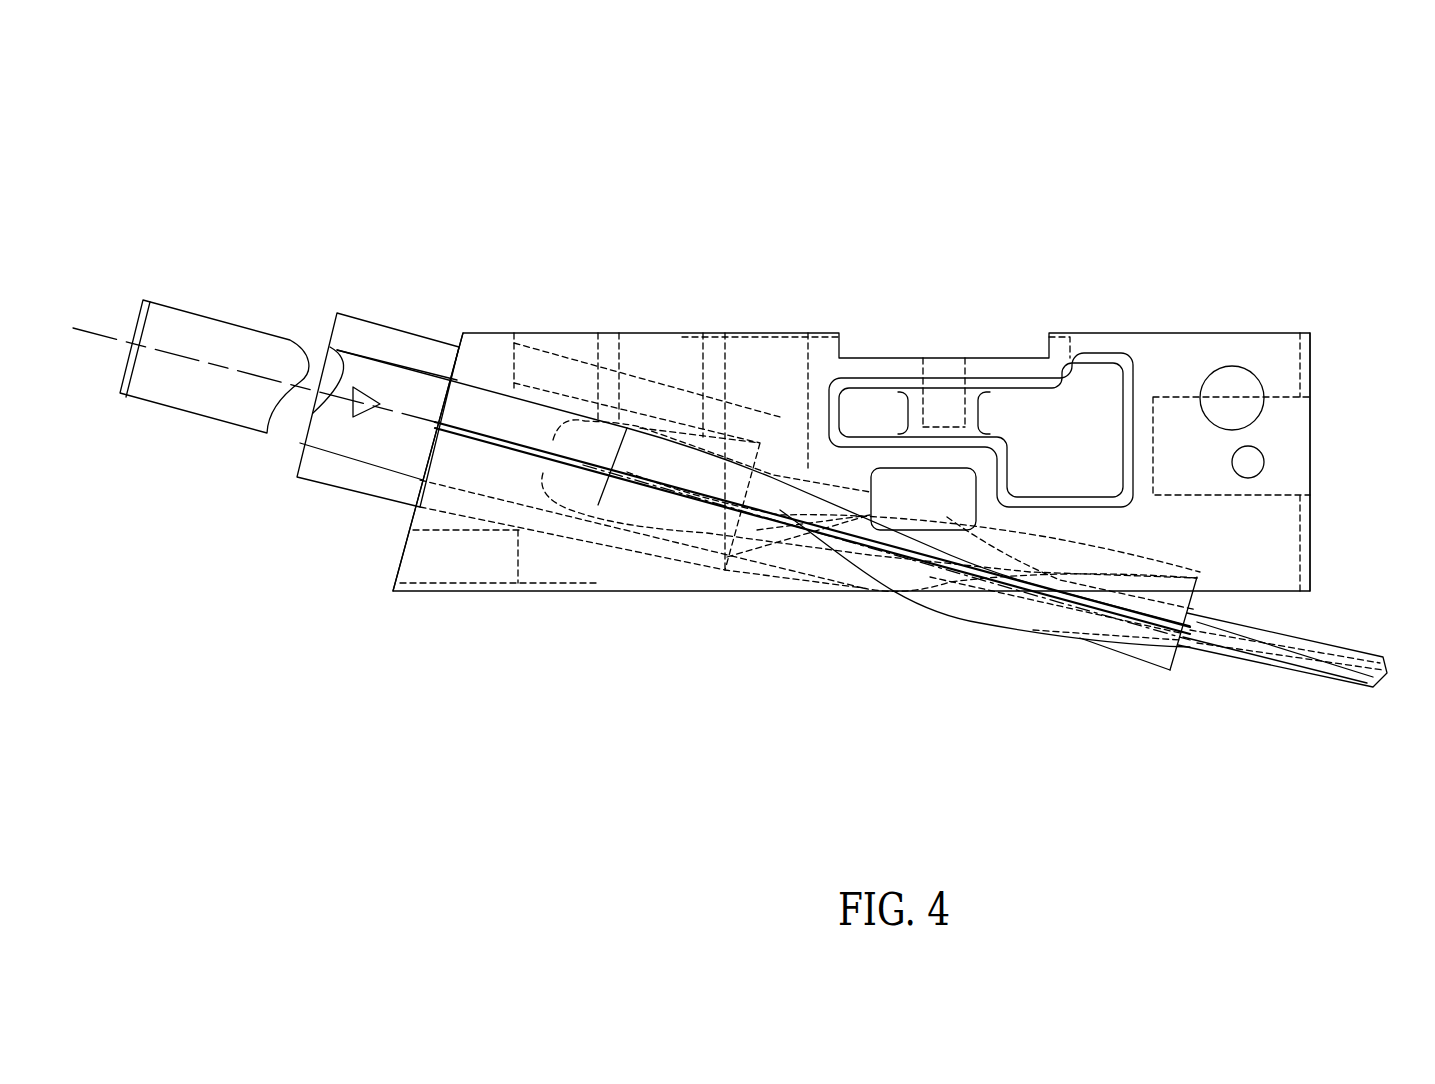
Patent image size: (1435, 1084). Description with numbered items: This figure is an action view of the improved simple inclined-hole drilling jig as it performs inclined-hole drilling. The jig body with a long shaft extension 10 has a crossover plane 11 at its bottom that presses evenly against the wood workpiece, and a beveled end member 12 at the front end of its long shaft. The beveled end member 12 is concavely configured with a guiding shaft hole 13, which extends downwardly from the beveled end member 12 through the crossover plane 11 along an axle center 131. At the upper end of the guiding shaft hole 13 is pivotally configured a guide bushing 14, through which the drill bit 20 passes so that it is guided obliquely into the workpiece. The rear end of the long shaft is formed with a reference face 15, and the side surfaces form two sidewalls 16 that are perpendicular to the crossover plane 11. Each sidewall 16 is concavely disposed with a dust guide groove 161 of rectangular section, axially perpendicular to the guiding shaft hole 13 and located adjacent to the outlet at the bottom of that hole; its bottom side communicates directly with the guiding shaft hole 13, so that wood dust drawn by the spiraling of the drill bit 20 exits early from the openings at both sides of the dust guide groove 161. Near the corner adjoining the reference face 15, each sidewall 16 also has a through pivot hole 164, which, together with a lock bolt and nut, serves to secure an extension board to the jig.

The jig body with a long shaft extension 10 is at (882, 260).
The crossover plane 11 is at (760, 593).
The beveled end member 12 is at (413, 518).
The guiding shaft hole 13 is at (795, 487).
The axle center 131 is at (393, 407).
The guide bushing 14 is at (377, 340).
The reference face 15 is at (1310, 438).
The sidewall 16 is at (1177, 358).
The dust guide groove 161 is at (913, 483).
The through pivot hole 164 is at (1232, 400).
The drill bit 20 is at (212, 337).